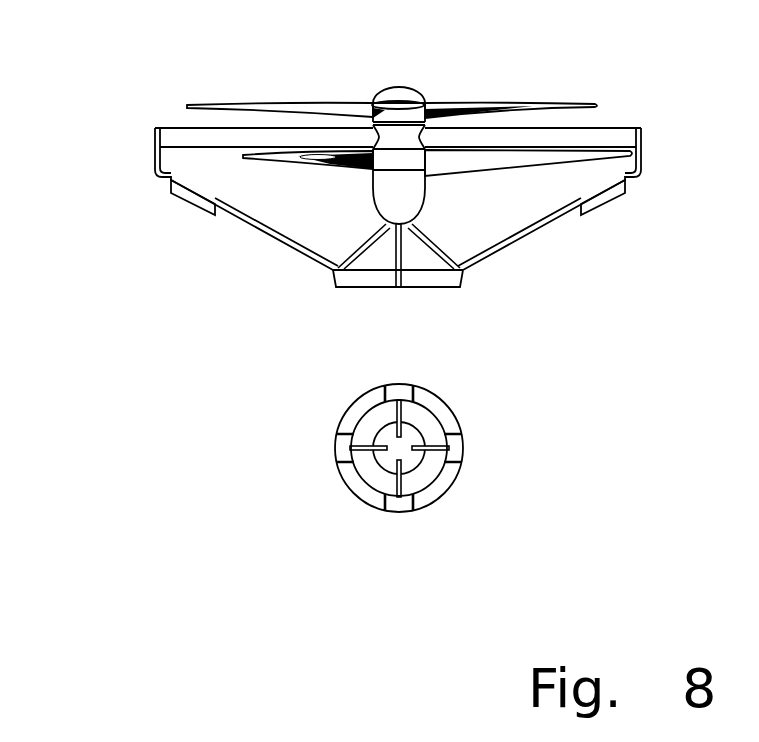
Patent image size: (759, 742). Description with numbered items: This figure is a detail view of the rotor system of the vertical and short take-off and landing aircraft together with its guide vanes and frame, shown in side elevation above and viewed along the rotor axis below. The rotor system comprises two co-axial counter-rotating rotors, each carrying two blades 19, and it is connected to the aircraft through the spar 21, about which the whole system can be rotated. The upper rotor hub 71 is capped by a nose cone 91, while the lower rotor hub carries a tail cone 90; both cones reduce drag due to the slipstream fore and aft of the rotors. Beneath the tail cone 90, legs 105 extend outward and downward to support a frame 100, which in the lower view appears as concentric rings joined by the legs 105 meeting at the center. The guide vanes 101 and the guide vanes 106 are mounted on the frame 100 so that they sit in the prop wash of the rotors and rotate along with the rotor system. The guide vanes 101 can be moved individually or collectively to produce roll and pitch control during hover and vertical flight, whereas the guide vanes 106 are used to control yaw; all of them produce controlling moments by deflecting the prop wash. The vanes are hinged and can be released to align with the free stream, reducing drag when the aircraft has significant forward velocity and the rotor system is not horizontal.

The blades 19 is at (422, 100).
The spar 21 is at (182, 127).
The upper rotor hub 71 is at (370, 107).
The tail cone 90 is at (405, 190).
The nose cone 91 is at (385, 92).
The frame 100 is at (542, 228).
The guide vanes 101 is at (363, 277).
The legs 105 is at (358, 243).
The guide vanes 106 is at (190, 202).